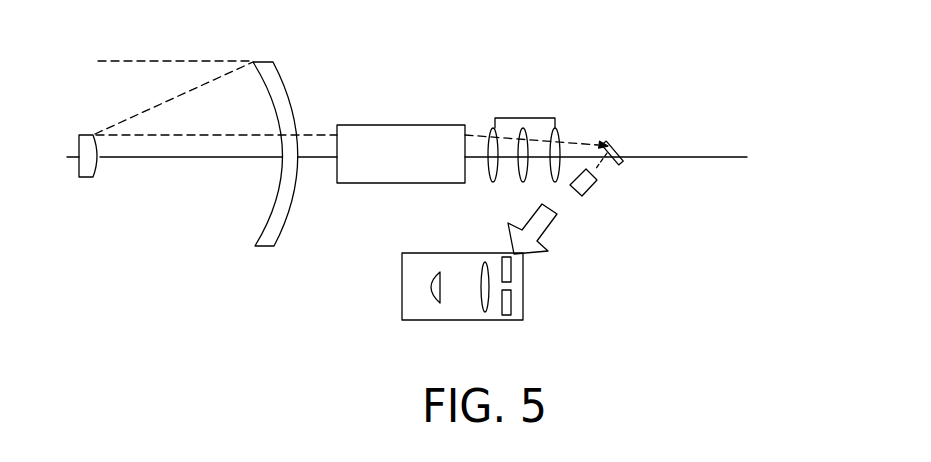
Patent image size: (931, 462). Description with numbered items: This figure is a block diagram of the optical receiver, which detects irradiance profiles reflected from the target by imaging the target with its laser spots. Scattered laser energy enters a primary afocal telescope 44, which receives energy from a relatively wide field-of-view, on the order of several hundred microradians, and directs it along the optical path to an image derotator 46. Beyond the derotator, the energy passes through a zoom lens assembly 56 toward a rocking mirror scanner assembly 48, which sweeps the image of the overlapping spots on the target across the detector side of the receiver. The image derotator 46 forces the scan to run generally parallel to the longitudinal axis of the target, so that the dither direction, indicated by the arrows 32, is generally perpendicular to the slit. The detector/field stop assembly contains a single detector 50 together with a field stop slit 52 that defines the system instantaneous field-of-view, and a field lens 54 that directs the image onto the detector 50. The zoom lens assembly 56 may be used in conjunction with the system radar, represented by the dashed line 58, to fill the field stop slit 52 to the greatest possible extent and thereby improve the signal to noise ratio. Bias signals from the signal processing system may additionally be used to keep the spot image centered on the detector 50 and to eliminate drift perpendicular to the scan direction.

The dither direction arrows 32 is at (451, 178).
The primary afocal telescope 44 is at (180, 252).
The image derotator 46 is at (424, 125).
The rocking mirror scanner assembly 48 is at (664, 98).
The single detector 50 is at (427, 283).
The field stop slit 52 is at (512, 305).
The field lens 54 is at (597, 251).
The zoom lens assembly 56 is at (576, 62).
The system radar (dashed line) 58 is at (312, 125).